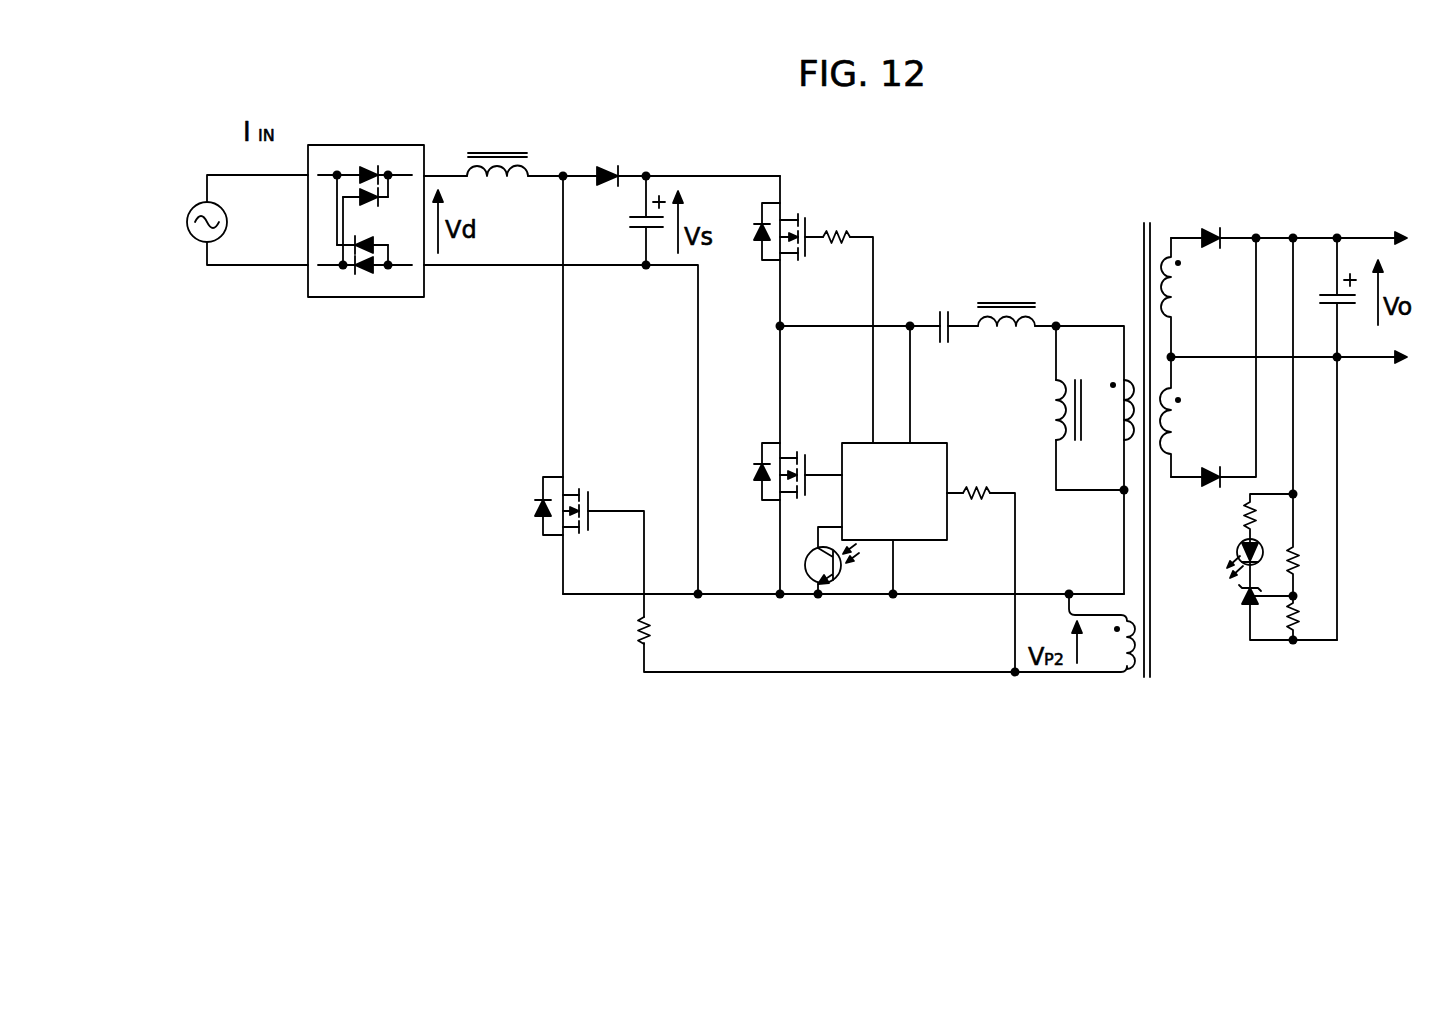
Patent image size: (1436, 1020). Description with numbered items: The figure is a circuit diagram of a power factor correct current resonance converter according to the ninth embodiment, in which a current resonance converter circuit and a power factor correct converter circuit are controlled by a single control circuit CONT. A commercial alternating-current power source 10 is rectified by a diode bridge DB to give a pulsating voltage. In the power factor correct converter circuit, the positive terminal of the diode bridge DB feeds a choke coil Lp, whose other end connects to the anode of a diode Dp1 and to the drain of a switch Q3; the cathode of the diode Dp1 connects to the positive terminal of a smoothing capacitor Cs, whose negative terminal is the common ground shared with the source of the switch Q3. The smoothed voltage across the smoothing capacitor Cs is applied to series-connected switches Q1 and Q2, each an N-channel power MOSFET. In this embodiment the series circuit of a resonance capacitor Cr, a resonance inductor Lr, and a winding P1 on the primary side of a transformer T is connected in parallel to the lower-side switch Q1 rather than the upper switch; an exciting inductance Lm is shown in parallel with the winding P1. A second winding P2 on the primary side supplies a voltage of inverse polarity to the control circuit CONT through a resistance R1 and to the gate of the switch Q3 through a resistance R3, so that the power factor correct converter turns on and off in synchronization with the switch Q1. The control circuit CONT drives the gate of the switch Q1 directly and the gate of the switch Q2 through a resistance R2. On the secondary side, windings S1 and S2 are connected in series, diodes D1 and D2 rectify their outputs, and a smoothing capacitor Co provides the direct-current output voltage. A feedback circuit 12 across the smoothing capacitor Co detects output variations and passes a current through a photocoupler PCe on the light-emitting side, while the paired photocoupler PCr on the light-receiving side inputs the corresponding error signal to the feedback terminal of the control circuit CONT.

The commercial alternating-current power source 10 is at (199, 204).
The feedback circuit 12 is at (1293, 441).
The diode bridge DB is at (366, 205).
The choke coil Lp is at (497, 152).
The diode Dp1 is at (612, 159).
The smoothing capacitor Cs is at (625, 220).
The switch Q1 is at (789, 464).
The switch Q2 is at (790, 223).
The switch Q3 is at (568, 499).
The resistance R1 is at (980, 478).
The resistance R2 is at (851, 223).
The resistance R3 is at (664, 631).
The control circuit CONT is at (894, 491).
The photocoupler on light-receiving side PCr is at (832, 581).
The resonance capacitor Cr is at (943, 310).
The resonance inductor Lr is at (1006, 301).
The exciting inductance Lm is at (1044, 410).
The winding on primary side P1 is at (1109, 410).
The second winding on primary side P2 is at (1075, 634).
The transformer T is at (1115, 434).
The winding on secondary side S1 is at (1186, 297).
The winding on secondary side S2 is at (1185, 417).
The diode D1 is at (1212, 224).
The diode D2 is at (1215, 465).
The smoothing capacitor Co is at (1328, 285).
The photocoupler on light-emitting side PCe is at (1221, 555).